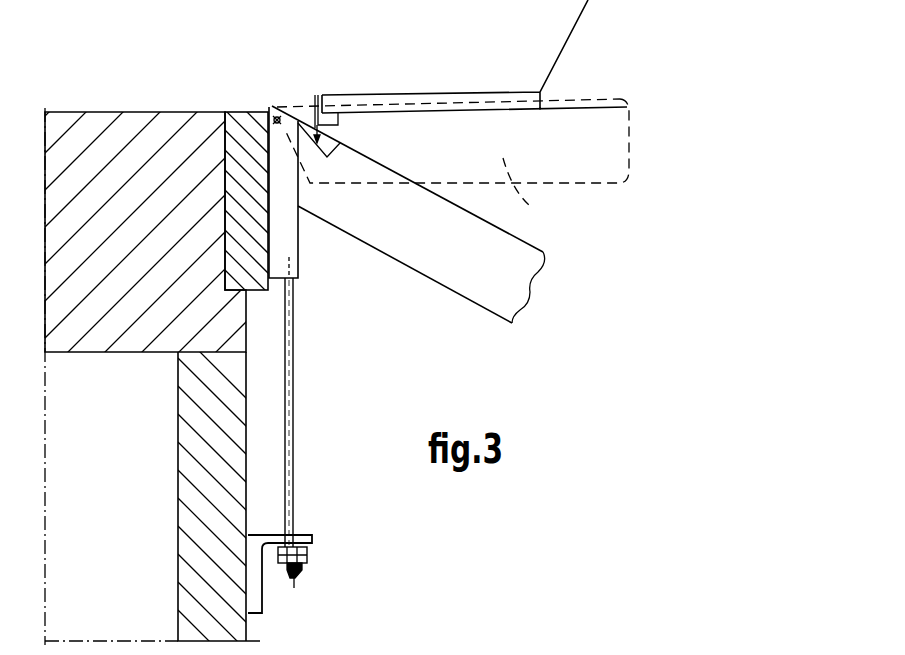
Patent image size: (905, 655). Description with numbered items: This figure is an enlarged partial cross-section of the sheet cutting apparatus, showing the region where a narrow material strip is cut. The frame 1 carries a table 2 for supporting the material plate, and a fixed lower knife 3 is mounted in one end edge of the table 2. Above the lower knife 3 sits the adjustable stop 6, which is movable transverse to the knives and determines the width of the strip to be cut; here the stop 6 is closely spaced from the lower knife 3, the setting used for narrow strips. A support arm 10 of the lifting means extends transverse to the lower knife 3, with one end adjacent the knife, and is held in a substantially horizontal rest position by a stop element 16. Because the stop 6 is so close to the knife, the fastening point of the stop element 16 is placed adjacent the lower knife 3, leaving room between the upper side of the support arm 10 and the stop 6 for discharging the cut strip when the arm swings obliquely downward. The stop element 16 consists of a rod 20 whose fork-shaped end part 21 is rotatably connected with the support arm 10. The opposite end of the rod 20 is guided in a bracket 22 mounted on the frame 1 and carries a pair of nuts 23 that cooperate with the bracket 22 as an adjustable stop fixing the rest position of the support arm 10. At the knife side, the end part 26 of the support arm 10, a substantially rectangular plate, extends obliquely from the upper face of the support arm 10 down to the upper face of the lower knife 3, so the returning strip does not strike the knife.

The frame 1 is at (252, 627).
The table 2 is at (135, 150).
The lower knife 3 is at (243, 133).
The adjustable stop 6 is at (412, 95).
The support arm 10 is at (447, 227).
The stop element 16 is at (298, 358).
The rod 20 is at (294, 413).
The fork-shaped end part 21 is at (289, 258).
The bracket 22 is at (305, 538).
The nuts 23 is at (306, 560).
The end part 26 is at (310, 110).